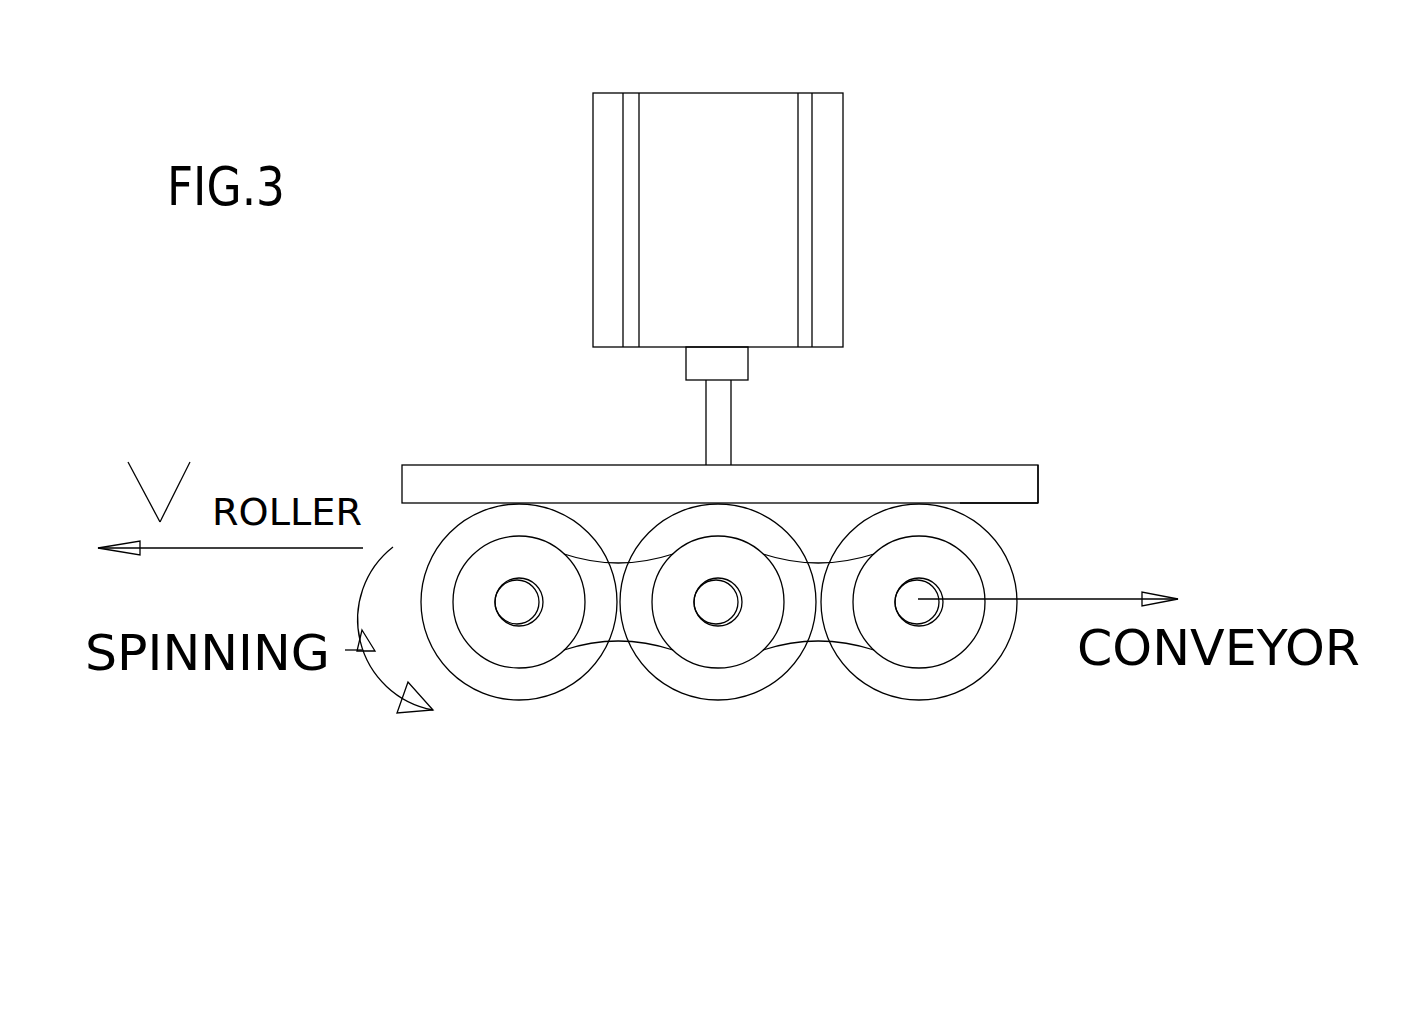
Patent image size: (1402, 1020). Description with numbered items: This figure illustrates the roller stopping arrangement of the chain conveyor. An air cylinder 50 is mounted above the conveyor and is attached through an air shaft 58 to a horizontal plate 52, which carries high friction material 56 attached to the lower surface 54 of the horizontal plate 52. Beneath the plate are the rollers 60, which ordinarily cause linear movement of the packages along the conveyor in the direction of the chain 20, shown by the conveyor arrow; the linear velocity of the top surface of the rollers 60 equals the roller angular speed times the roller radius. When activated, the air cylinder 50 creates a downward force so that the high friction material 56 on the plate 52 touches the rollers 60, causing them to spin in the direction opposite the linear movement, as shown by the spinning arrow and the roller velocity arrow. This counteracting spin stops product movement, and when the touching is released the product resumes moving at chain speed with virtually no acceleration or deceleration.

The chain 20 is at (818, 647).
The air cylinder 50 is at (843, 207).
The horizontal plate 52 is at (912, 468).
The lower surface 54 is at (1033, 503).
The high friction material 56 is at (1008, 504).
The air shaft 58 is at (731, 421).
The rollers 60 is at (973, 680).